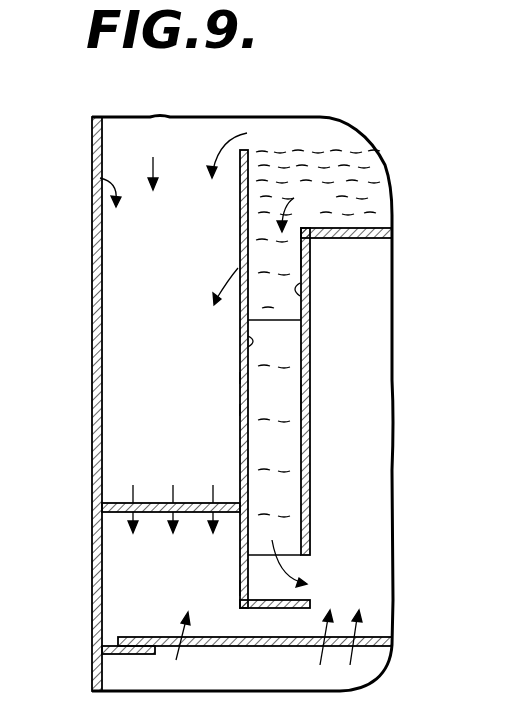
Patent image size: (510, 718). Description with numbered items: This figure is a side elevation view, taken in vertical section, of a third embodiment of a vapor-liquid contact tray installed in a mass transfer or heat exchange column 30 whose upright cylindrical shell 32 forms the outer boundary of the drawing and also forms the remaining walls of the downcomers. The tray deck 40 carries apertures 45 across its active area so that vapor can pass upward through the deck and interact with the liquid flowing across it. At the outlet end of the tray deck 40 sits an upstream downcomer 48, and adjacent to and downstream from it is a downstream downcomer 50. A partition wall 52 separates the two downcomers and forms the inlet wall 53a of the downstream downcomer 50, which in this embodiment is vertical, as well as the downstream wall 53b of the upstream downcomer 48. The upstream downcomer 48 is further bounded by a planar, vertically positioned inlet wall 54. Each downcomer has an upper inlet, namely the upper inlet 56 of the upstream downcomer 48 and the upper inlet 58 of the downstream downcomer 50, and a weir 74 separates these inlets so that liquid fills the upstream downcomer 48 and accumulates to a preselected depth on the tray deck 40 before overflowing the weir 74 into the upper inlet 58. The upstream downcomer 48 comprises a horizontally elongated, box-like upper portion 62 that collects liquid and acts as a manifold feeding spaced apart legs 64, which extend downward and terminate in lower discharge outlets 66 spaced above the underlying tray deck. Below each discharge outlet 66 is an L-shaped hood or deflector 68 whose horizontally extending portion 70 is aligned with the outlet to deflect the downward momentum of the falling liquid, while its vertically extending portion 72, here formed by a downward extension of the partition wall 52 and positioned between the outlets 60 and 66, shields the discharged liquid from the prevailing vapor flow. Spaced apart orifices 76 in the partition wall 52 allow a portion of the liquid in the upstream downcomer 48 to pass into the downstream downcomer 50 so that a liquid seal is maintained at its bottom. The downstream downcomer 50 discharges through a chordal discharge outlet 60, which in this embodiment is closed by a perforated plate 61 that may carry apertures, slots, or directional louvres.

The mass transfer or heat exchange column 30 is at (88, 550).
The upright cylindrical shell 32 is at (92, 228).
The tray deck 40 is at (378, 228).
The apertures 45 is at (236, 646).
The upstream downcomer 48 is at (318, 348).
The downstream downcomer 50 is at (156, 158).
The partition wall 52 is at (240, 410).
The inlet wall 53a is at (240, 341).
The downstream wall 53b is at (240, 378).
The inlet wall 54 is at (300, 289).
The upper inlet 56 is at (318, 333).
The upper inlet 58 is at (92, 176).
The discharge outlet 60 is at (184, 452).
The perforated plate 61 is at (153, 503).
The upper portion 62 is at (318, 255).
The legs 64 is at (318, 395).
The lower discharge outlets 66 is at (297, 560).
The L-shaped hood or deflector 68 is at (234, 588).
The horizontally extending portion 70 is at (288, 605).
The vertically extending portion 72 is at (240, 562).
The weir 74 is at (240, 190).
The orifices 76 is at (240, 262).